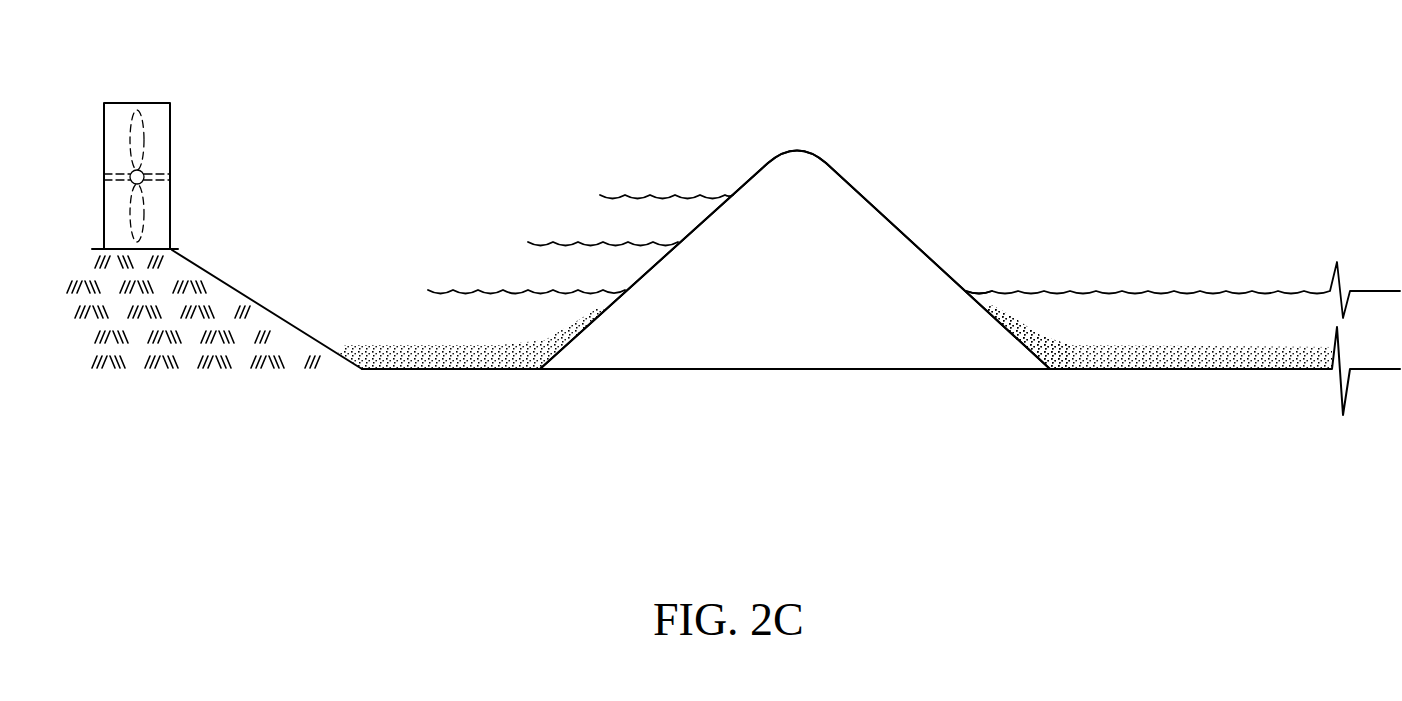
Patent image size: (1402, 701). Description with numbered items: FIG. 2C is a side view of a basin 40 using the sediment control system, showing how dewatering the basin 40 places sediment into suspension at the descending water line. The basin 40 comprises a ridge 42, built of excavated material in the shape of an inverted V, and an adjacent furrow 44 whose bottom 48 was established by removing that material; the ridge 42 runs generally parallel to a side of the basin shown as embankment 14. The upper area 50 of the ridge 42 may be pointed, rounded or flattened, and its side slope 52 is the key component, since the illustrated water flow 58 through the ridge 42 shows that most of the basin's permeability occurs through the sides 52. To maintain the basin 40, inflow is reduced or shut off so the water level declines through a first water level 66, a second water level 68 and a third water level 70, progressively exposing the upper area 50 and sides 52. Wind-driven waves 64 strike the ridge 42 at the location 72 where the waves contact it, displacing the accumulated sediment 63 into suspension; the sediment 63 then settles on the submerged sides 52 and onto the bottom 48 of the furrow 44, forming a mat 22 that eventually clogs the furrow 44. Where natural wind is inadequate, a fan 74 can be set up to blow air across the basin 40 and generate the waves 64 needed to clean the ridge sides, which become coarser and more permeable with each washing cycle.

The embankment 14 is at (195, 355).
The mat 22 is at (1245, 345).
The basin 40 is at (1093, 123).
The ridge 42 is at (798, 145).
The furrow 44 is at (1143, 247).
The bottom of furrow 48 is at (1177, 370).
The upper area of ridge 50 is at (818, 180).
The side slope of ridge 52 is at (885, 205).
The water flow 58 is at (620, 310).
The accumulated sediment 63 is at (1050, 333).
The wind-driven waves 64 is at (1180, 292).
The first water level 66 is at (625, 195).
The second water level 68 is at (550, 242).
The third water level 70 is at (450, 290).
The location where waves contact ridge 72 is at (972, 287).
The fan 74 is at (172, 100).